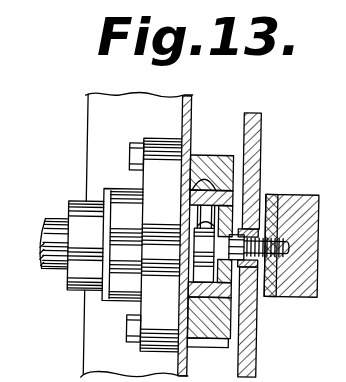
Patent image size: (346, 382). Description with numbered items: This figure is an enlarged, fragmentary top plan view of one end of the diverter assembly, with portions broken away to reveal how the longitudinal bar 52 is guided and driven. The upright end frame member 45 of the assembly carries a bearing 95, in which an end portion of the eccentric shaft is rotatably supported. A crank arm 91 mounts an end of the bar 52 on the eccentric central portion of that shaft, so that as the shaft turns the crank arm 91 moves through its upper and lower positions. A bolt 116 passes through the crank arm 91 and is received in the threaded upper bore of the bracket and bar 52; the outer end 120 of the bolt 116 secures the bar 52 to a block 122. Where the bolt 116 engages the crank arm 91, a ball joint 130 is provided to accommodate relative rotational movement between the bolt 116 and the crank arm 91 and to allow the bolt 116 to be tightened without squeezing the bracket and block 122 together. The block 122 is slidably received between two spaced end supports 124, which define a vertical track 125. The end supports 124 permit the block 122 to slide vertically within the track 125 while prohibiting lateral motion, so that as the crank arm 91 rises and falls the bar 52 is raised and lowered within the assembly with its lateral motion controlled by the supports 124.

The first upright end frame member 45 is at (92, 122).
The longitudinal bar 52 is at (312, 297).
The crank arm 91 is at (262, 114).
The bearing 95 is at (68, 289).
The bolt 116 is at (289, 248).
The outer end of bolt 120 is at (204, 226).
The block 122 is at (181, 302).
The end support 124 is at (231, 156).
The vertical track 125 is at (190, 172).
The ball joint 130 is at (258, 222).